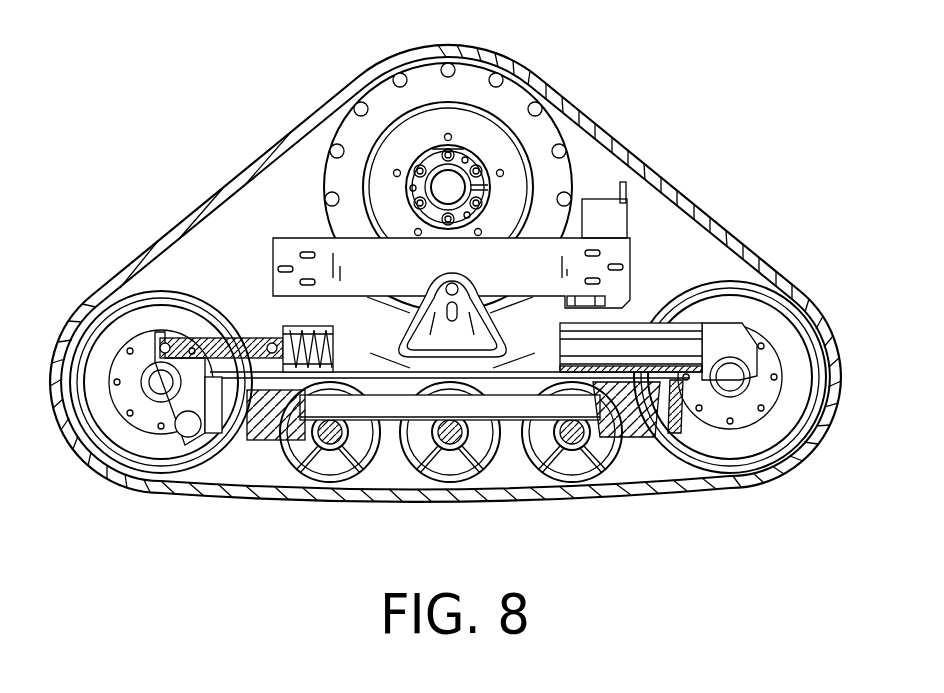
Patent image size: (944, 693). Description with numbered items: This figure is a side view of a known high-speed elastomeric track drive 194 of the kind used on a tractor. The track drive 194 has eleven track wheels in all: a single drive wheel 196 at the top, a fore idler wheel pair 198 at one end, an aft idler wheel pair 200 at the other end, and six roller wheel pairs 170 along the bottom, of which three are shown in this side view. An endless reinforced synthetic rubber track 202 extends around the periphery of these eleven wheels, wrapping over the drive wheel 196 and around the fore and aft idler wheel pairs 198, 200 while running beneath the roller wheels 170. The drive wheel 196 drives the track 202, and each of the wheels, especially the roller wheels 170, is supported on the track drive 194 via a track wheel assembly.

The roller wheel pairs 170 is at (287, 480).
The track drive 194 is at (146, 205).
The drive wheel 196 is at (570, 112).
The fore idler wheel pair 198 is at (118, 429).
The aft idler wheel pair 200 is at (790, 413).
The endless reinforced synthetic rubber track 202 is at (666, 179).